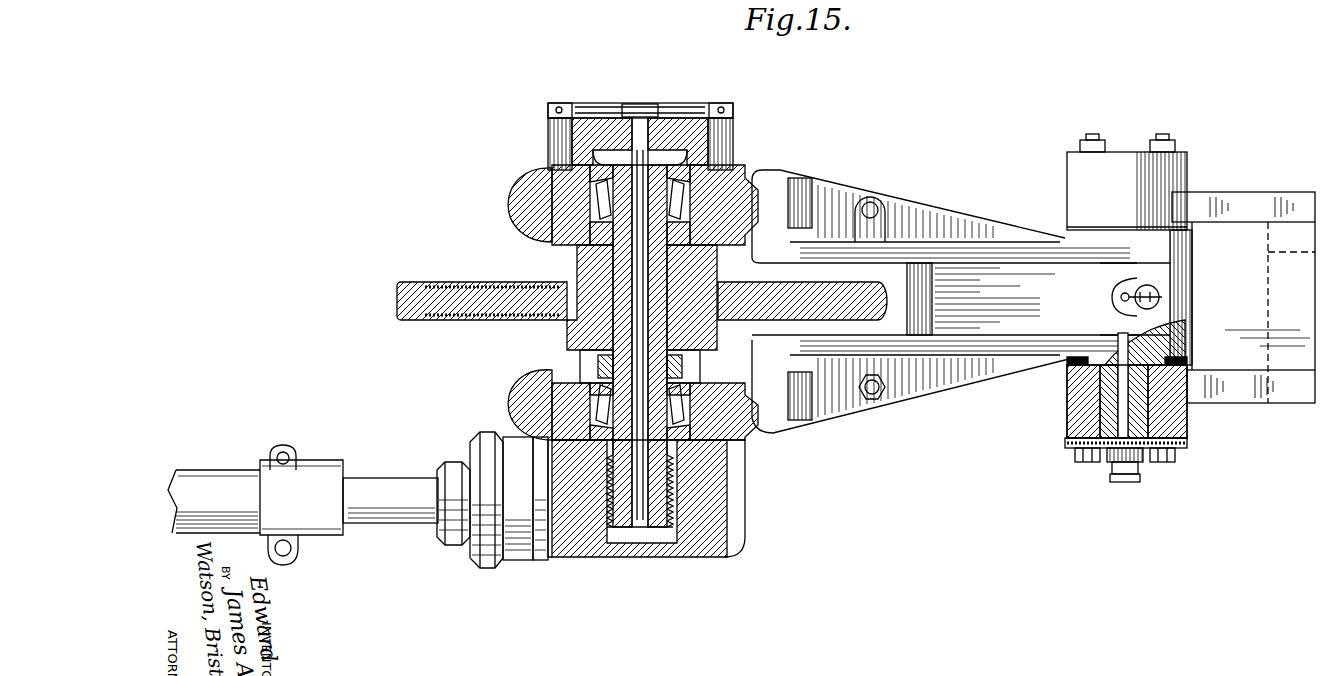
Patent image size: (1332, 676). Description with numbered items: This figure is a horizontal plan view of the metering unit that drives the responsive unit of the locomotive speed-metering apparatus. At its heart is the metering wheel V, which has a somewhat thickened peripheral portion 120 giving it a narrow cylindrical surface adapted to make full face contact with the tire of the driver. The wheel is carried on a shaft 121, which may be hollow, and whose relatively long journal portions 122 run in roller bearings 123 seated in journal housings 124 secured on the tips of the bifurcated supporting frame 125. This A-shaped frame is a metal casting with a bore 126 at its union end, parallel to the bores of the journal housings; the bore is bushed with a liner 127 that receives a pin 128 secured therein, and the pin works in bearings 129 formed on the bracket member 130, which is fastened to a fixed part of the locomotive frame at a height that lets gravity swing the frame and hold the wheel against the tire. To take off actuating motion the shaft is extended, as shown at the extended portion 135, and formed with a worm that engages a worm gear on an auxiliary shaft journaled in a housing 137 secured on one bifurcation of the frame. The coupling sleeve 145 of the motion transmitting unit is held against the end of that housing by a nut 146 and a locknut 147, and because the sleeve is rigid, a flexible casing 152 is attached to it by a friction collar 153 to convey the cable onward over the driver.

The metering wheel V is at (457, 271).
The thickened peripheral portion 120 is at (397, 299).
The shaft 121 is at (580, 352).
The journal portions 122 is at (612, 217).
The roller bearings 123 is at (608, 198).
The journal housings 124 is at (508, 192).
The bifurcated supporting frame 125 is at (905, 198).
The bore 126 is at (1073, 362).
The liner 127 is at (1187, 411).
The pin 128 is at (1178, 325).
The bearings 129 is at (1187, 447).
The bracket member 130 is at (1220, 203).
The extended shaft portion 135 is at (666, 470).
The housing 137 is at (710, 556).
The coupling sleeve 145 is at (390, 474).
The nut 146 is at (488, 567).
The locknut 147 is at (452, 533).
The flexible casing 152 is at (197, 472).
The friction collar 153 is at (285, 445).